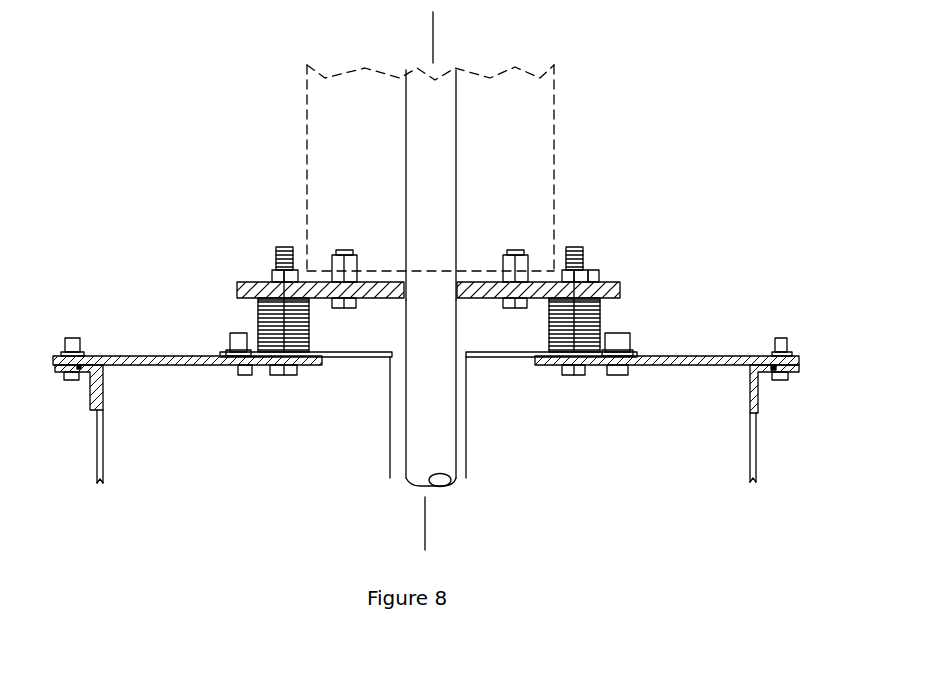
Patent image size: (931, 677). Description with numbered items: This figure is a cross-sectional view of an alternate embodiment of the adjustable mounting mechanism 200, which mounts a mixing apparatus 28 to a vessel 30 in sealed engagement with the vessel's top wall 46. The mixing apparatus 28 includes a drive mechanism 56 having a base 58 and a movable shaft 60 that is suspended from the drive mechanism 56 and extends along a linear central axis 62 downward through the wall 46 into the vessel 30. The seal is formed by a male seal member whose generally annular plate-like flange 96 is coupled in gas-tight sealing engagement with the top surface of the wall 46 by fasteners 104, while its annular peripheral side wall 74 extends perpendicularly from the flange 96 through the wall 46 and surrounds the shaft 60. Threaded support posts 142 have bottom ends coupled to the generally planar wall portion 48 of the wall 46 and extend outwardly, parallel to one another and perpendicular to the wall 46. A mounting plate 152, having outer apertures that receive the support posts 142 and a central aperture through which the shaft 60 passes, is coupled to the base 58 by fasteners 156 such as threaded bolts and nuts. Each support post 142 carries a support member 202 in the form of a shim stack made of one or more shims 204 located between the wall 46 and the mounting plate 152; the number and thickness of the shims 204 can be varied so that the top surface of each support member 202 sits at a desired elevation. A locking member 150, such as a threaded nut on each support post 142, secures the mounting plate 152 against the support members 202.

The mixing apparatus 28 is at (602, 82).
The drive mechanism 56 is at (555, 125).
The base 58 is at (470, 270).
The movable shaft 60 is at (440, 140).
The linear central axis 62 is at (430, 522).
The annular peripheral side wall 74 is at (467, 458).
The flange 96 is at (498, 357).
The threaded support post 142 is at (273, 262).
The locking member 150 is at (275, 270).
The mounting plate 152 is at (620, 289).
The fasteners 156 is at (340, 250).
The mounting mechanism 200 is at (663, 263).
The support member 202 is at (313, 325).
The shims 204 is at (258, 323).
The fasteners 104 is at (232, 370).
The planar wall portion 48 is at (725, 358).
The top wall 46 is at (746, 353).
The vessel 30 is at (765, 438).